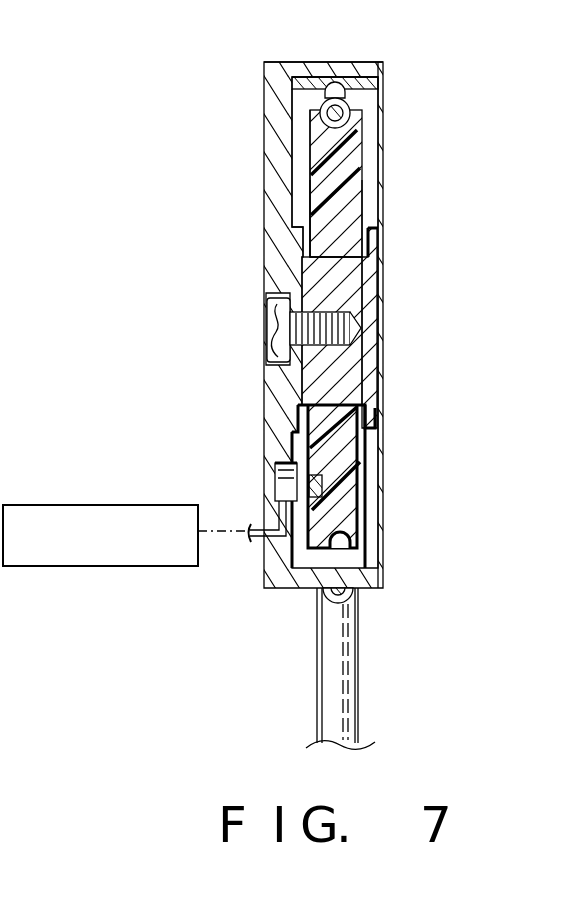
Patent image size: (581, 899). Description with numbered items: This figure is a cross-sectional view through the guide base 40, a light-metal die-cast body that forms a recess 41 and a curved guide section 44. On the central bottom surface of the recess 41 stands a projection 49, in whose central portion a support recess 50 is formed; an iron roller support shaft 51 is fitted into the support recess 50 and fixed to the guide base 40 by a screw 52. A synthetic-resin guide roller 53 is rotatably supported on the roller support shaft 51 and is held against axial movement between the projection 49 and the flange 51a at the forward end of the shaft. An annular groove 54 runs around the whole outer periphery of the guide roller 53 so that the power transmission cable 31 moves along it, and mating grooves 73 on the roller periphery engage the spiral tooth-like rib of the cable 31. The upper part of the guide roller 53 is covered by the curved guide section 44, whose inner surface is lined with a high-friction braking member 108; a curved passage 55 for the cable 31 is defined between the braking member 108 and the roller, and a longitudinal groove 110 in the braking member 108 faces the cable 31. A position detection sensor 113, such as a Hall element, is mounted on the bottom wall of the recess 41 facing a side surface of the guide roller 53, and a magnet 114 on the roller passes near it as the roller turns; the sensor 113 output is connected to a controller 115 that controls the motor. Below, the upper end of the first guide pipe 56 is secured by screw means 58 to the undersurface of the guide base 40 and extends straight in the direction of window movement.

The power transmission cable 31 is at (346, 103).
The guide base 40 is at (270, 190).
The recess 41 is at (366, 465).
The curved guide section 44 is at (343, 68).
The projection 49 is at (300, 417).
The support recess 50 is at (302, 267).
The roller support shaft 51 is at (363, 286).
The flange 51a is at (373, 422).
The screw 52 is at (278, 353).
The guide roller 53 is at (354, 197).
The annular groove 54 is at (348, 124).
The curved passage 55 is at (315, 97).
The first guide pipe 56 is at (352, 673).
The screw means 58 is at (319, 608).
The mating grooves 73 is at (350, 528).
The braking member 108 is at (376, 84).
The groove 110 is at (322, 82).
The position detection sensor 113 is at (276, 470).
The magnet 114 is at (323, 478).
The controller 115 is at (117, 567).